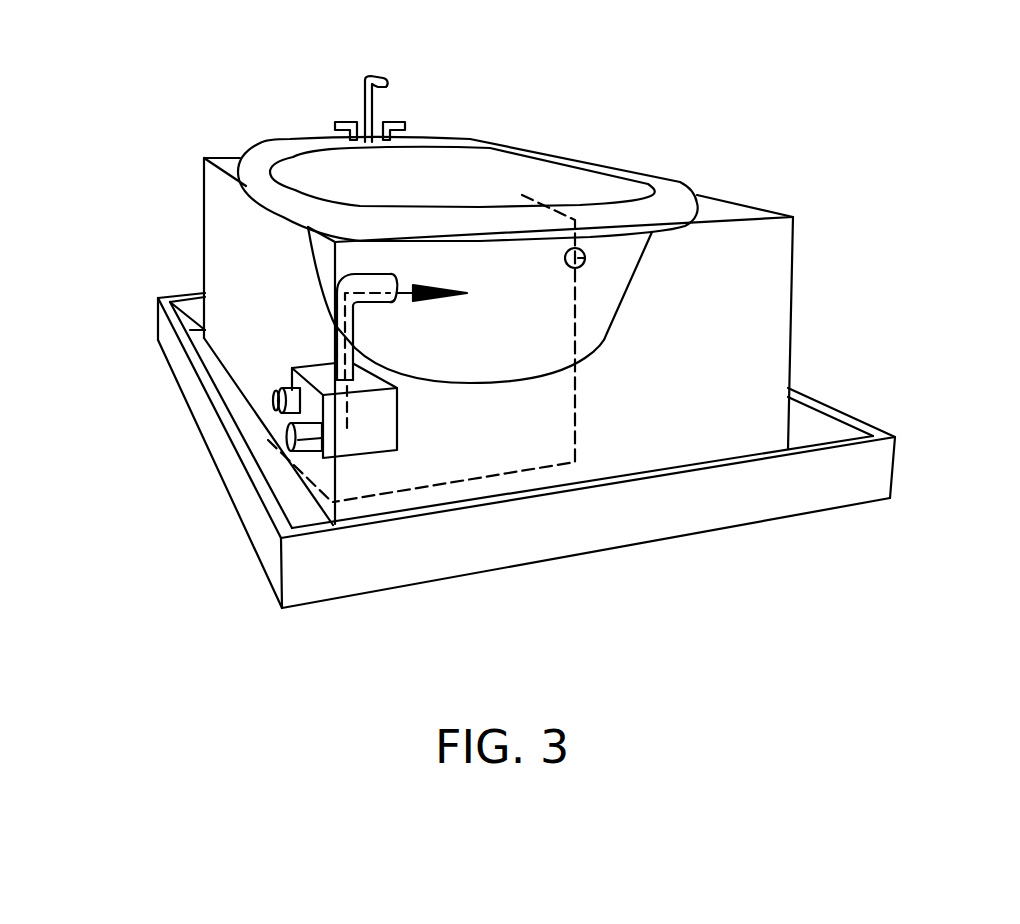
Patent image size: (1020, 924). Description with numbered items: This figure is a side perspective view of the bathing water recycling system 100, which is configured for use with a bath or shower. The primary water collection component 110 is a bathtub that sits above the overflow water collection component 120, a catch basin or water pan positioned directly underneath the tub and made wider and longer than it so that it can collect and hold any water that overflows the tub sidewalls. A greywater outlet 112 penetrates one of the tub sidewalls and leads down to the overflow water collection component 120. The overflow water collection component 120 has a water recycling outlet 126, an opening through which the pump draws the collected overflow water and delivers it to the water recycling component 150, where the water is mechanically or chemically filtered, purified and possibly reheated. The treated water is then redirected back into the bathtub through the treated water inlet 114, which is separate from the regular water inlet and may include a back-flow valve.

The bathing water recycling system 100 is at (733, 138).
The primary water collection component 110 is at (558, 142).
The greywater outlet 112 is at (585, 255).
The treated water inlet 114 is at (389, 300).
The overflow water collection component 120 is at (863, 408).
The water recycling outlet 126 is at (287, 433).
The water recycling component 150 is at (322, 478).